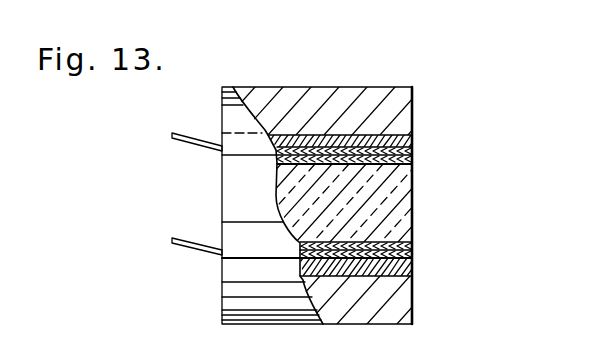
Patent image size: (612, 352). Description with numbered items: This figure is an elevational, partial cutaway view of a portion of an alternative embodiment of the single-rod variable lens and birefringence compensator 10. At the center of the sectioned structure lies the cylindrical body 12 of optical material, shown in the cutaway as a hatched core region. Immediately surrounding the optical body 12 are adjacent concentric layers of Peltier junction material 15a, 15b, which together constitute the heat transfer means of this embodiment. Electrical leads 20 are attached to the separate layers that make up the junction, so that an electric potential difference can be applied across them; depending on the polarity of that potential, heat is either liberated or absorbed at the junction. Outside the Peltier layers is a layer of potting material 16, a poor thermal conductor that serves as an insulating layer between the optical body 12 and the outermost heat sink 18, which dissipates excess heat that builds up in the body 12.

The single-rod variable lens and birefringence compensator 10 is at (311, 62).
The cylindrical body of optical material 12 is at (412, 206).
The Peltier junction material layer 15a is at (412, 152).
The Peltier junction material layer 15b is at (412, 163).
The potting material layer 16 is at (412, 140).
The heat sink 18 is at (411, 103).
The electrical leads 20 is at (172, 136).